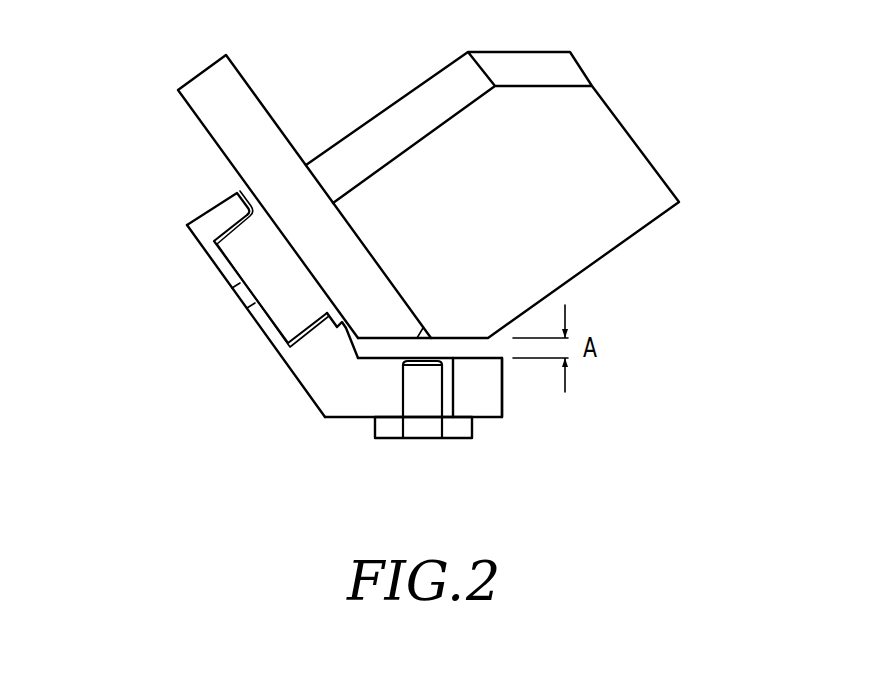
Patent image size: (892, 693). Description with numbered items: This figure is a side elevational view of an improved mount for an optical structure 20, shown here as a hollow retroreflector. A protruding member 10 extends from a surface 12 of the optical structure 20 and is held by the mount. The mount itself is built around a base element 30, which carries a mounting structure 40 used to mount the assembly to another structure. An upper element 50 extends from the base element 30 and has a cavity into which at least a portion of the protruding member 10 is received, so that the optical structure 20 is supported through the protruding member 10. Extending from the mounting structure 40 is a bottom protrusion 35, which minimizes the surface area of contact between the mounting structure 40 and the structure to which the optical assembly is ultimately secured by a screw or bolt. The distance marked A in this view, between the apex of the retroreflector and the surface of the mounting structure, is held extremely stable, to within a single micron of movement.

The protruding member 10 is at (290, 305).
The surface 12 is at (197, 120).
The optical structure 20 is at (630, 121).
The base element 30 is at (343, 387).
The bottom protrusion 35 is at (384, 427).
The mounting structure 40 is at (483, 402).
The upper element 50 is at (262, 341).